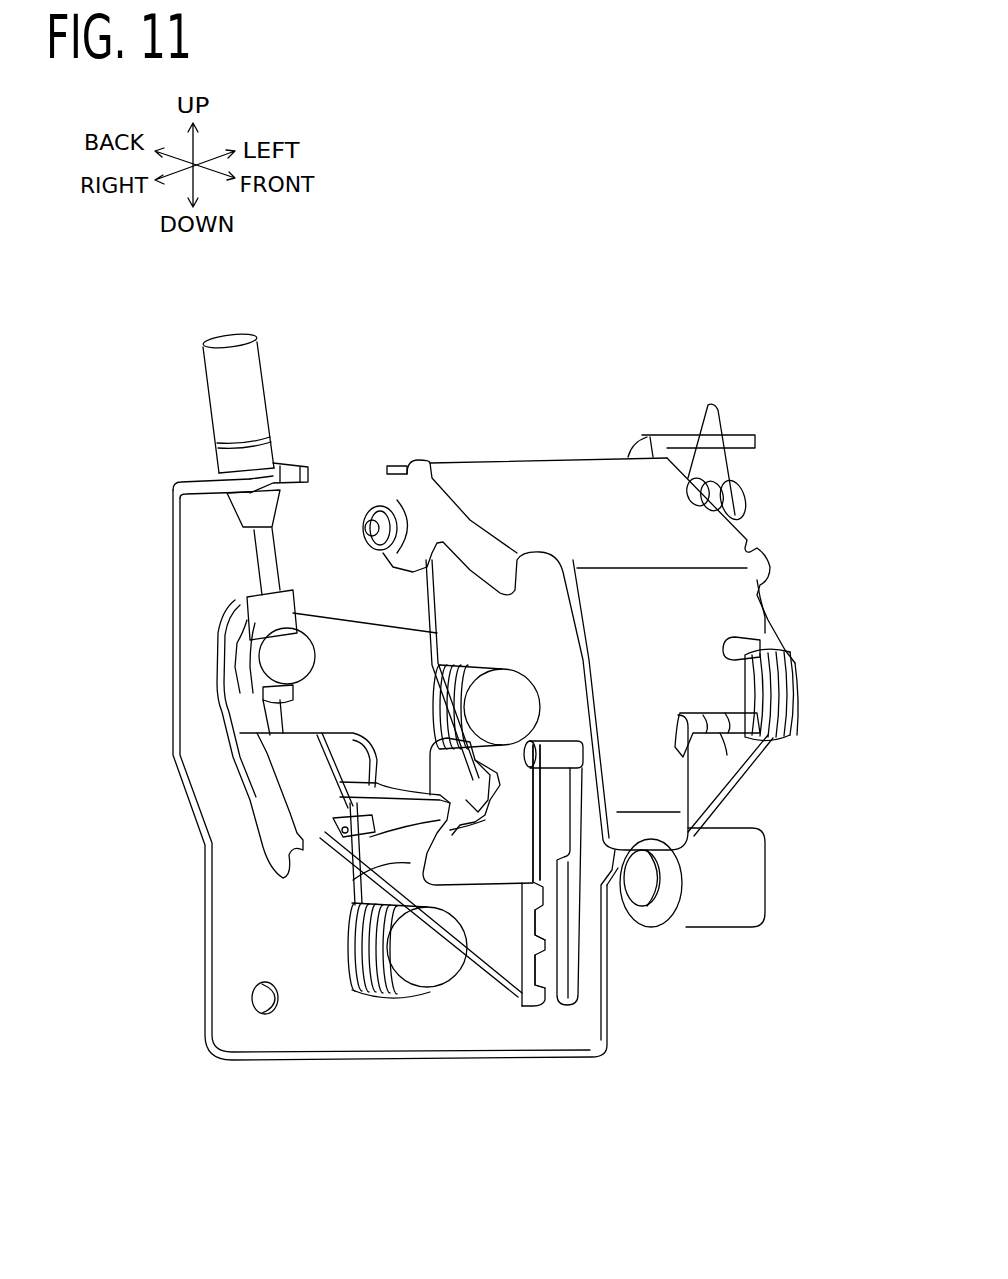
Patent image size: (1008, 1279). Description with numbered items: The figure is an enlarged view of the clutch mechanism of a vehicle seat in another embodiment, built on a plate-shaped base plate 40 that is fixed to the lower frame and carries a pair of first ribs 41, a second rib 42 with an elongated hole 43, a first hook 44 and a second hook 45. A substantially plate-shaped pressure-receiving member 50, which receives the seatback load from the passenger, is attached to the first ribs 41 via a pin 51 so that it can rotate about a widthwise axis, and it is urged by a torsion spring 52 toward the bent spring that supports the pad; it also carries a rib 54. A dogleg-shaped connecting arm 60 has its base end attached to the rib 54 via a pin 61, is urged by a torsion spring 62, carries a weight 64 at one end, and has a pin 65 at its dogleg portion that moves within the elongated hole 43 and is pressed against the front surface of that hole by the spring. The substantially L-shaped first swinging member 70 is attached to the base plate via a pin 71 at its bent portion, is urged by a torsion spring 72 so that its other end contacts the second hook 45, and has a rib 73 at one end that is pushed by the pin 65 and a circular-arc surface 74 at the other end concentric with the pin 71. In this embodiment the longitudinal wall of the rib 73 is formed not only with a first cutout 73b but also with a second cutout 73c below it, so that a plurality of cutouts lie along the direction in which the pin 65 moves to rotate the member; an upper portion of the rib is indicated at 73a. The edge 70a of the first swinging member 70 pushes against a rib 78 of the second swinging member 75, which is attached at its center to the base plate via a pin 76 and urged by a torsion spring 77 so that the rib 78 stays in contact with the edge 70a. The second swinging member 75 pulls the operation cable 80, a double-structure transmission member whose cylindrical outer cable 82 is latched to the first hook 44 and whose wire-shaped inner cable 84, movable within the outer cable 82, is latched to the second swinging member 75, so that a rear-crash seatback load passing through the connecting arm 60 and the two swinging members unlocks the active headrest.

The base plate 40 is at (150, 667).
The first ribs 41 is at (413, 467).
The second rib 42 is at (582, 1040).
The elongated hole 43 is at (568, 971).
The first hook 44 is at (212, 480).
The second hook 45 is at (350, 862).
The pressure-receiving member 50 is at (537, 450).
The pin 51 is at (747, 508).
The torsion spring 52 is at (727, 500).
The rib 54 is at (723, 727).
The connecting arm 60 is at (740, 794).
The pin 61 is at (790, 703).
The torsion spring 62 is at (768, 683).
The weight 64 is at (740, 872).
The pin 65 is at (570, 752).
The first swinging member 70 is at (455, 886).
The edge 70a is at (450, 780).
The pin 71 is at (417, 973).
The torsion spring 72 is at (363, 988).
The rib 73 is at (527, 1003).
The plate upper portion 73a is at (537, 880).
The first cutout 73b is at (536, 924).
The second cutout 73c is at (536, 979).
The circular-arc surface 74 is at (352, 786).
The second swinging member 75 is at (299, 748).
The pin 76 is at (507, 700).
The torsion spring 77 is at (445, 668).
The rib 78 is at (482, 795).
The operation cable 80 is at (290, 517).
The outer cable 82 is at (250, 395).
The inner cable 84 is at (265, 557).